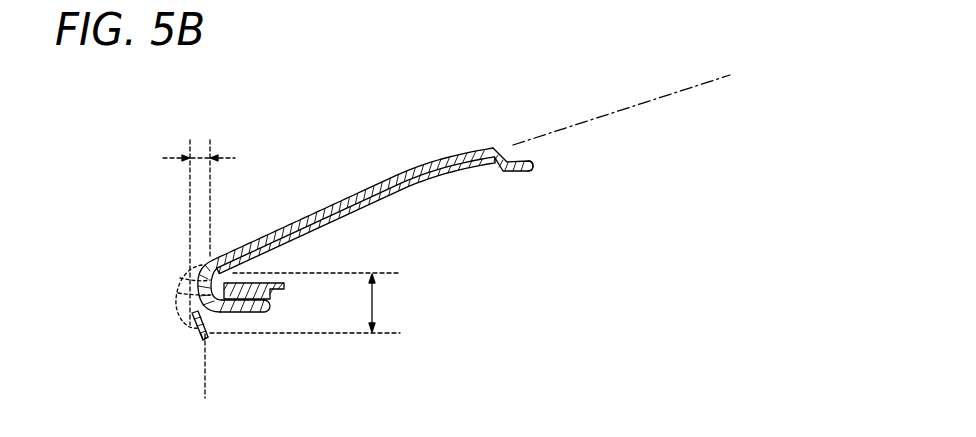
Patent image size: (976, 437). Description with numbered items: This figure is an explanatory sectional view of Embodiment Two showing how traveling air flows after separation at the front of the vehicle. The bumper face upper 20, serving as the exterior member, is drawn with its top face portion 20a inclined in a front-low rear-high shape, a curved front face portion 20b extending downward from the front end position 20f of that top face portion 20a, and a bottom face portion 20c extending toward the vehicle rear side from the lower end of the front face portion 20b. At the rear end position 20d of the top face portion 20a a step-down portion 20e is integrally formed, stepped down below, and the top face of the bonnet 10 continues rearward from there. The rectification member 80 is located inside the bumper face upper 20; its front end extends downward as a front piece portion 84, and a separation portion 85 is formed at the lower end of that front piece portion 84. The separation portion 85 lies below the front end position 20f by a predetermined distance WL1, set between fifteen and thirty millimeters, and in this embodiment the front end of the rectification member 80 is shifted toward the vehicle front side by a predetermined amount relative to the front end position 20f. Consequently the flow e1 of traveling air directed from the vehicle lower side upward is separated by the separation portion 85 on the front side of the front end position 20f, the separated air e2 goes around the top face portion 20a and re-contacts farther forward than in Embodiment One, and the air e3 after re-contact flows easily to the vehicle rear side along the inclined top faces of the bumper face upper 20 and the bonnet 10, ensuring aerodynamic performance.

The bonnet 10 is at (580, 125).
The bumper face upper 20 is at (350, 223).
The top face portion 20a is at (330, 186).
The front face portion 20b is at (178, 292).
The bottom face portion 20c is at (252, 318).
The rear end position 20d is at (500, 146).
The step-down portion 20e is at (522, 172).
The front end position 20f is at (198, 270).
The rectification member 80 is at (280, 307).
The front piece portion 84 is at (192, 318).
The separation portion 85 is at (201, 339).
The flow of traveling air e1 is at (205, 388).
The separated air e2 is at (185, 254).
The air after re-contact e3 is at (277, 230).
The predetermined distance WL1 is at (380, 306).